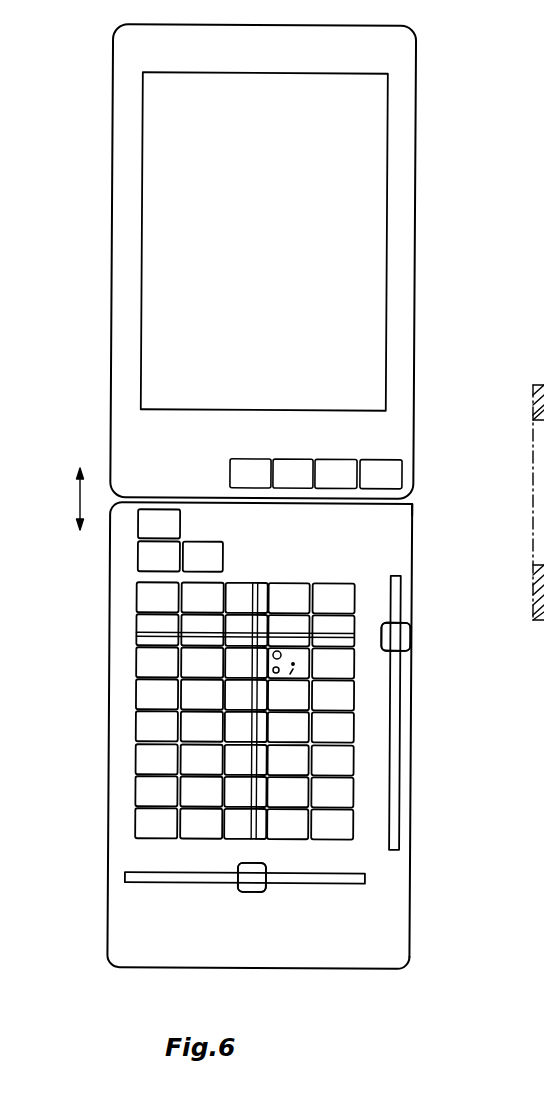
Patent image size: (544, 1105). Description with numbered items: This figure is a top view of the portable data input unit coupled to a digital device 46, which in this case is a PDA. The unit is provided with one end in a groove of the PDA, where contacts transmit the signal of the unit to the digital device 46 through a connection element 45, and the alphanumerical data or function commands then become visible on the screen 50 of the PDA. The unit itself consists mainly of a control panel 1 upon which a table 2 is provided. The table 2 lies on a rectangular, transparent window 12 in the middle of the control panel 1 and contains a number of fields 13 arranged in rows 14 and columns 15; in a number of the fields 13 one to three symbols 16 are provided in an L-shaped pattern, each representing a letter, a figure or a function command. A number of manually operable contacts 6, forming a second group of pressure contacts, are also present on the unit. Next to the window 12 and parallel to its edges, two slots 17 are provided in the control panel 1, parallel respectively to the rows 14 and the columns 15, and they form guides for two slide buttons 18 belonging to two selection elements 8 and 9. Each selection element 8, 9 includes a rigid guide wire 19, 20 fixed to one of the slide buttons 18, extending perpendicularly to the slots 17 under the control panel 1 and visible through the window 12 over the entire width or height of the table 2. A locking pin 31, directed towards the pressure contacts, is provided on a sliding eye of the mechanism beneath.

The control panel 1 is at (405, 555).
The table 2 is at (130, 625).
The contacts 6 is at (200, 552).
The selection element 8 is at (420, 637).
The selection element 9 is at (270, 898).
The window 12 is at (128, 589).
The fields 13 is at (170, 768).
The rows 14 is at (128, 701).
The columns 15 is at (166, 862).
The symbols 16 is at (300, 660).
The slots 17 is at (393, 597).
The slide buttons 18 is at (400, 642).
The guide wire 19 is at (344, 634).
The guide wire 20 is at (255, 757).
The locking pin 31 is at (200, 550).
The connection element 45 is at (372, 536).
The digital device 46 is at (418, 106).
The screen 50 is at (343, 187).